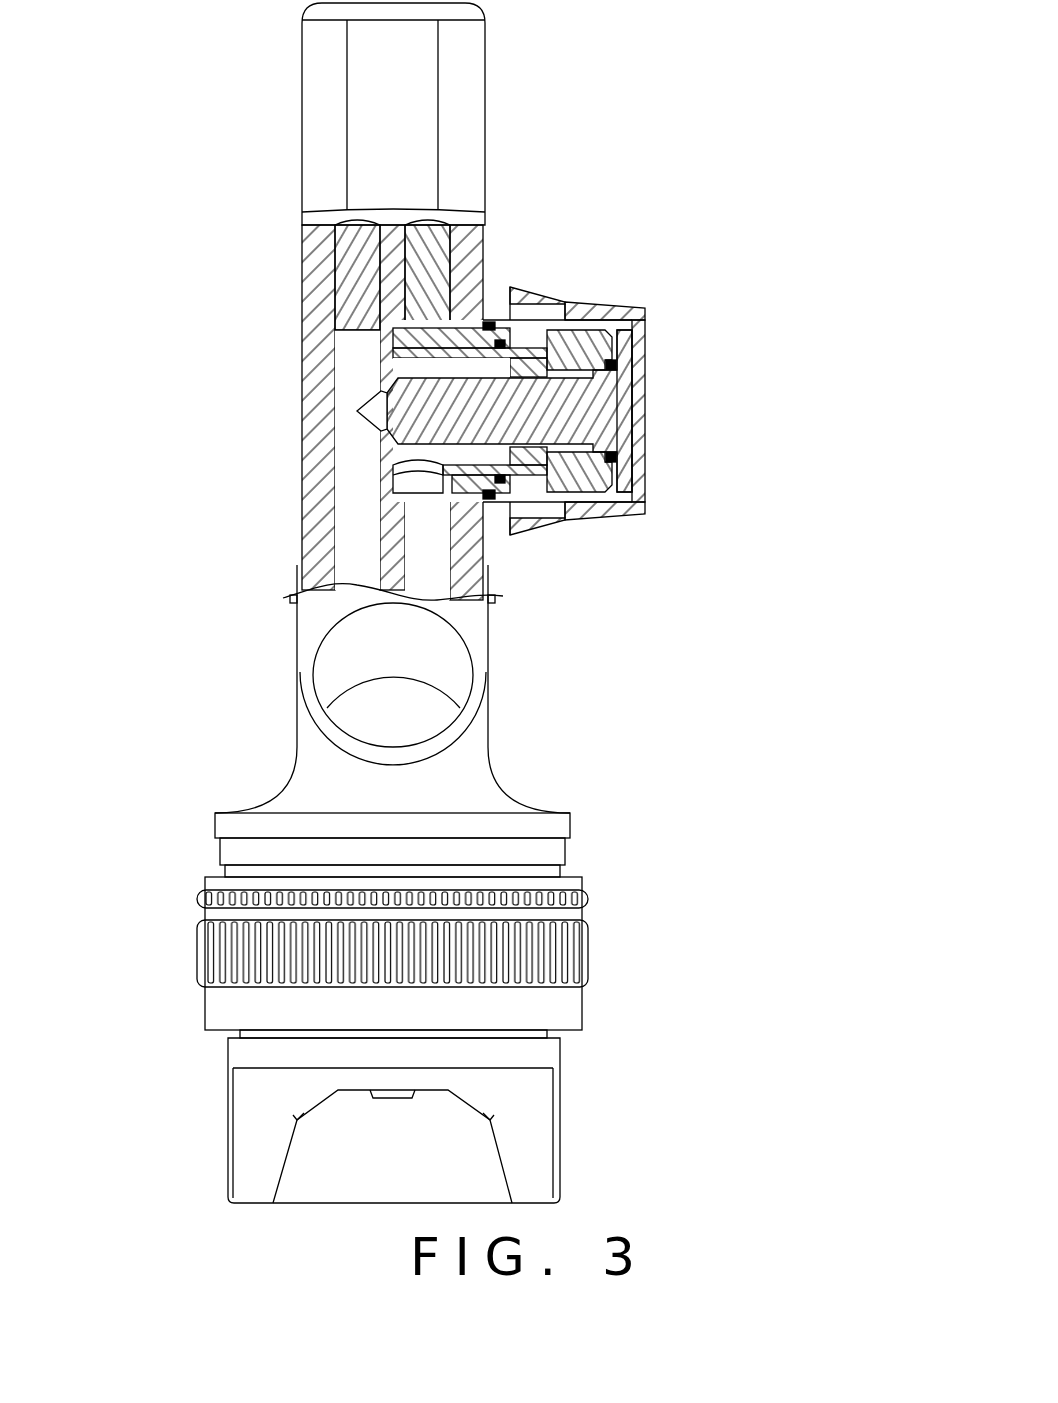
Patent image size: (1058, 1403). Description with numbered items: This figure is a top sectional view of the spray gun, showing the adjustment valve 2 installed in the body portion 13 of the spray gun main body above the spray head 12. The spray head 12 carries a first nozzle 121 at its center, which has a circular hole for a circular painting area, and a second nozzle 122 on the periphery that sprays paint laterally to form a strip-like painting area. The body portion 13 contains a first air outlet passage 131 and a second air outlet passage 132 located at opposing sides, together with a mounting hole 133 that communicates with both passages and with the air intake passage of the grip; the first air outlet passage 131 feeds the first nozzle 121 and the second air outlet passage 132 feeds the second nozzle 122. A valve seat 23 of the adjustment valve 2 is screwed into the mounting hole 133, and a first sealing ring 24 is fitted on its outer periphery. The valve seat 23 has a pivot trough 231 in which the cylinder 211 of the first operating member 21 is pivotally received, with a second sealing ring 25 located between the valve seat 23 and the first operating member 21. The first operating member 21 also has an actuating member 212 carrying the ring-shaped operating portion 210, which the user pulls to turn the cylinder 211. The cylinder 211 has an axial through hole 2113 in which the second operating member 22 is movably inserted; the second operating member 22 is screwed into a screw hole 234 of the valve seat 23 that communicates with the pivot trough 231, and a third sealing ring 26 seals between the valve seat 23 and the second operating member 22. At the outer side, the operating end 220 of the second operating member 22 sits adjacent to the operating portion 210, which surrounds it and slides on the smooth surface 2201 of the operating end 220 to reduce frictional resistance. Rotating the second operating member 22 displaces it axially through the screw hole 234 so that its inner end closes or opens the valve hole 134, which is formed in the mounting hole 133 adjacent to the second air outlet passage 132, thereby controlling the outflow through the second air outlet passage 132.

The adjustment valve 2 is at (532, 389).
The first operating member 21 is at (648, 402).
The operating portion 210 is at (522, 305).
The cylinder 211 is at (545, 535).
The through hole 2113 is at (610, 343).
The actuating member 212 is at (560, 525).
The second operating member 22 is at (587, 365).
The operating end 220 is at (620, 310).
The smooth surface 2201 is at (568, 300).
The valve seat 23 is at (477, 407).
The pivot trough 231 is at (397, 379).
The screw hole 234 is at (530, 466).
The first sealing ring 24 is at (488, 500).
The second sealing ring 25 is at (593, 303).
The third sealing ring 26 is at (617, 368).
The spray head 12 is at (396, 1120).
The first nozzle 121 is at (392, 1100).
The second nozzle 122 is at (537, 1168).
The body portion 13 is at (412, 341).
The first air outlet passage 131 is at (432, 565).
The second air outlet passage 132 is at (357, 508).
The mounting hole 133 is at (484, 278).
The valve hole 134 is at (380, 415).